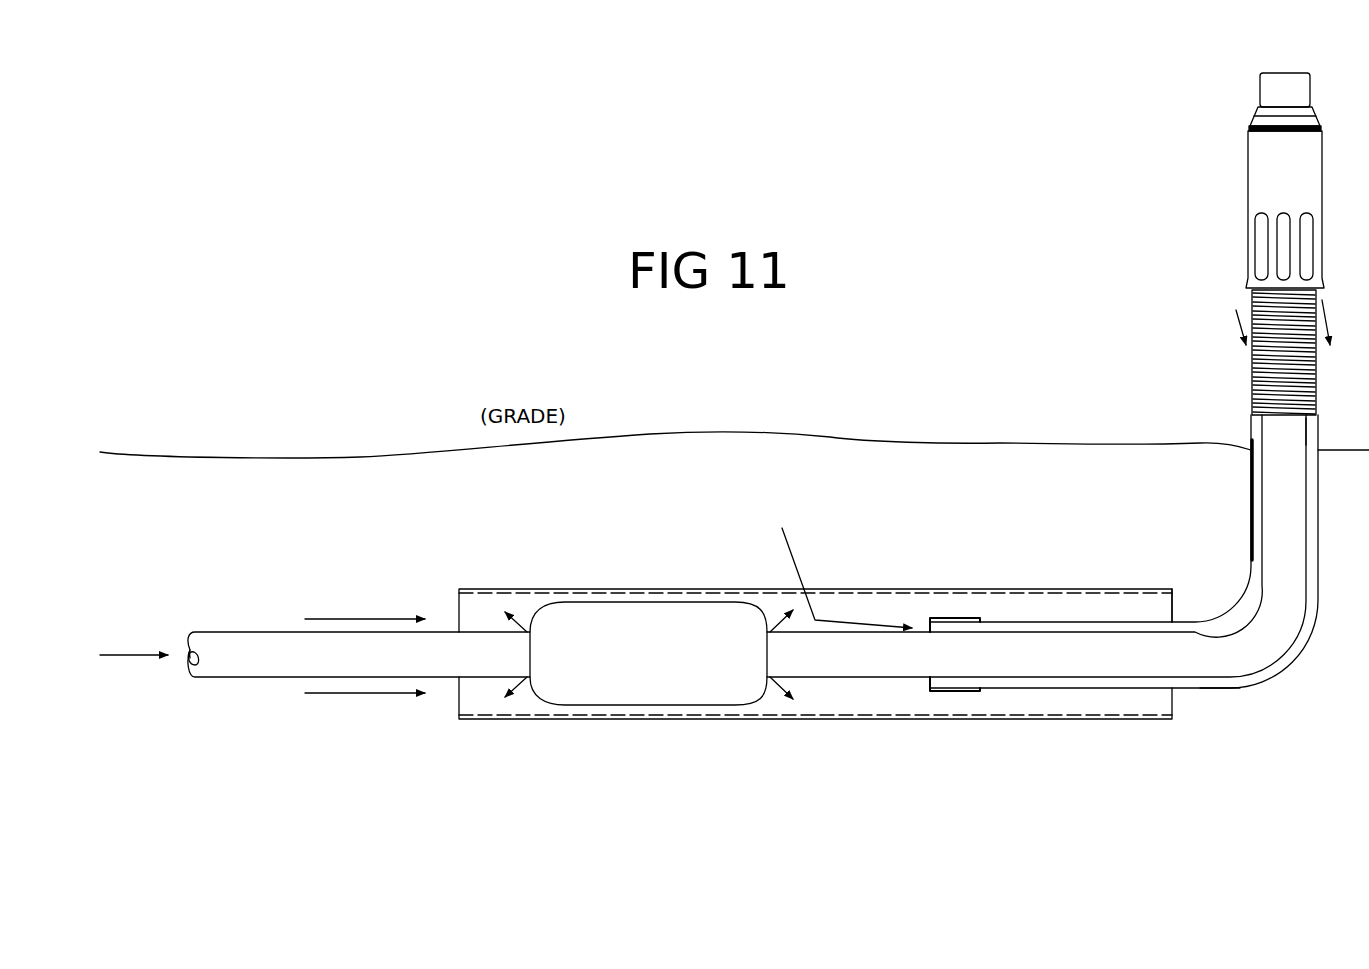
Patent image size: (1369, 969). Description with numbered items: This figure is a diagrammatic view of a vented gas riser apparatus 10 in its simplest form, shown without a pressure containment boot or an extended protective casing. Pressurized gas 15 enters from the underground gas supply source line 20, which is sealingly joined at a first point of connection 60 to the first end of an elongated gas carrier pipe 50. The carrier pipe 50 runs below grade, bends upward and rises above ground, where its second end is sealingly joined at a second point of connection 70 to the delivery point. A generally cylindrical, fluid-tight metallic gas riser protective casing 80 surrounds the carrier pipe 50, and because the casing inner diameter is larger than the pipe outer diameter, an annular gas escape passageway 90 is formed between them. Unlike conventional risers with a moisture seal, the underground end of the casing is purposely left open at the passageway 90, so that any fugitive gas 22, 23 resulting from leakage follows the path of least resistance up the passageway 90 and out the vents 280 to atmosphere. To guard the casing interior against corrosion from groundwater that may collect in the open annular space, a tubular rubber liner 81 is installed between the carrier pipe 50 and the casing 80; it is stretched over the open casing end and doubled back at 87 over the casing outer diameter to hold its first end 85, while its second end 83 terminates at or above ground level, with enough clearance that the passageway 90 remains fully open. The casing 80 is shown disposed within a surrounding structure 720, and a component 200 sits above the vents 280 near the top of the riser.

The vented gas riser apparatus 10 is at (1172, 620).
The pressurized gas 15 is at (120, 645).
The gas supply source line 20 is at (252, 630).
The fugitive gas 22 is at (520, 622).
The fugitive gas 23 is at (351, 612).
The gas carrier pipe 50 is at (862, 720).
The first point of connection 60 is at (590, 625).
The second point of connection 70 is at (1265, 75).
The gas riser protective casing 80 is at (1250, 495).
The rubber liner 81 is at (1237, 688).
The second end of liner 83 is at (1310, 445).
The first end of liner 85 is at (1000, 690).
The doubled-back portion of liner 87 is at (963, 690).
The gas escape passageway 90 is at (827, 556).
The valve housing 200 is at (1255, 170).
The vents 280 is at (1236, 310).
The casing 720 is at (710, 722).